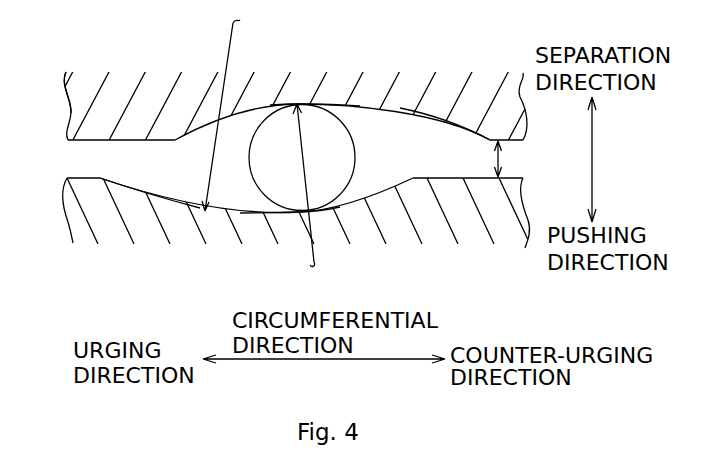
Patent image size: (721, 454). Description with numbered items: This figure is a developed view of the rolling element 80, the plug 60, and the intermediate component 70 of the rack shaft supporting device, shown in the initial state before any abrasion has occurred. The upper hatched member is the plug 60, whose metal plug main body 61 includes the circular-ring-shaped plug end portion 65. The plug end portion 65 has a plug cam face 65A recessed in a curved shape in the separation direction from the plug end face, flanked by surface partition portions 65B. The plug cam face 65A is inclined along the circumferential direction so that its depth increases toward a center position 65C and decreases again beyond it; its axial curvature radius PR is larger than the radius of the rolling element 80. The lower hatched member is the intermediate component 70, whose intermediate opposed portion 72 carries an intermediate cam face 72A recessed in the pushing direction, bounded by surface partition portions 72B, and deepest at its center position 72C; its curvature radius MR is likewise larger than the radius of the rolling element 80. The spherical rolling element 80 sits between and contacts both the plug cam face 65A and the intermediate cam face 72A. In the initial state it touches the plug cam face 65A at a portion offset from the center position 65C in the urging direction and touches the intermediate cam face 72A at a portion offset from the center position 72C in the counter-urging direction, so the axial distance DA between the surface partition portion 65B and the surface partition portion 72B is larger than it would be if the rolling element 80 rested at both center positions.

The plug 60 is at (78, 58).
The plug main body 61 is at (65, 80).
The plug end portion 65 is at (70, 114).
The plug cam face 65A is at (450, 124).
The surface partition portion 65B is at (69, 141).
The center position 65C is at (352, 110).
The intermediate component 70 is at (78, 258).
The intermediate opposed portion 72 is at (66, 205).
The intermediate cam face 72A is at (128, 181).
The surface partition portion 72B is at (70, 178).
The center position 72C is at (258, 212).
The rolling element 80 is at (346, 151).
The curvature radius of intermediate cam face MR is at (210, 166).
The curvature radius of plug cam face PR is at (300, 158).
The distance between partition portions DA is at (483, 166).